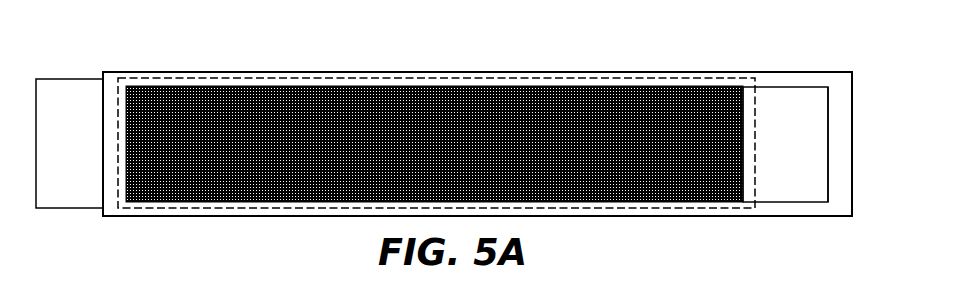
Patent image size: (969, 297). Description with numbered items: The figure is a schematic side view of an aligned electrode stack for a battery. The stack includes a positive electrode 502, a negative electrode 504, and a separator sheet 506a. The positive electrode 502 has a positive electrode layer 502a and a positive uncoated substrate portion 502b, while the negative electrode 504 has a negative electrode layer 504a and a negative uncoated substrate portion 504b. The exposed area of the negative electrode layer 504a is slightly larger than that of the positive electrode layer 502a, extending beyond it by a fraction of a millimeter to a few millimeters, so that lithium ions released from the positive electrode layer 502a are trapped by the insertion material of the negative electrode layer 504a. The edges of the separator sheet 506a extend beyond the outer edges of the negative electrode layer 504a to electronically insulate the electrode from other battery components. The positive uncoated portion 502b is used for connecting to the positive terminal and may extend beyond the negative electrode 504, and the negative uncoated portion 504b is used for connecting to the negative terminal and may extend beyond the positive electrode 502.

The negative electrode 504 is at (115, 82).
The negative uncoated substrate portion 504b is at (77, 82).
The negative electrode layer 504a is at (490, 78).
The separator sheet 506a is at (350, 72).
The positive electrode layer 502a is at (622, 95).
The positive electrode 502 is at (740, 92).
The positive uncoated substrate portion 502b is at (850, 40).